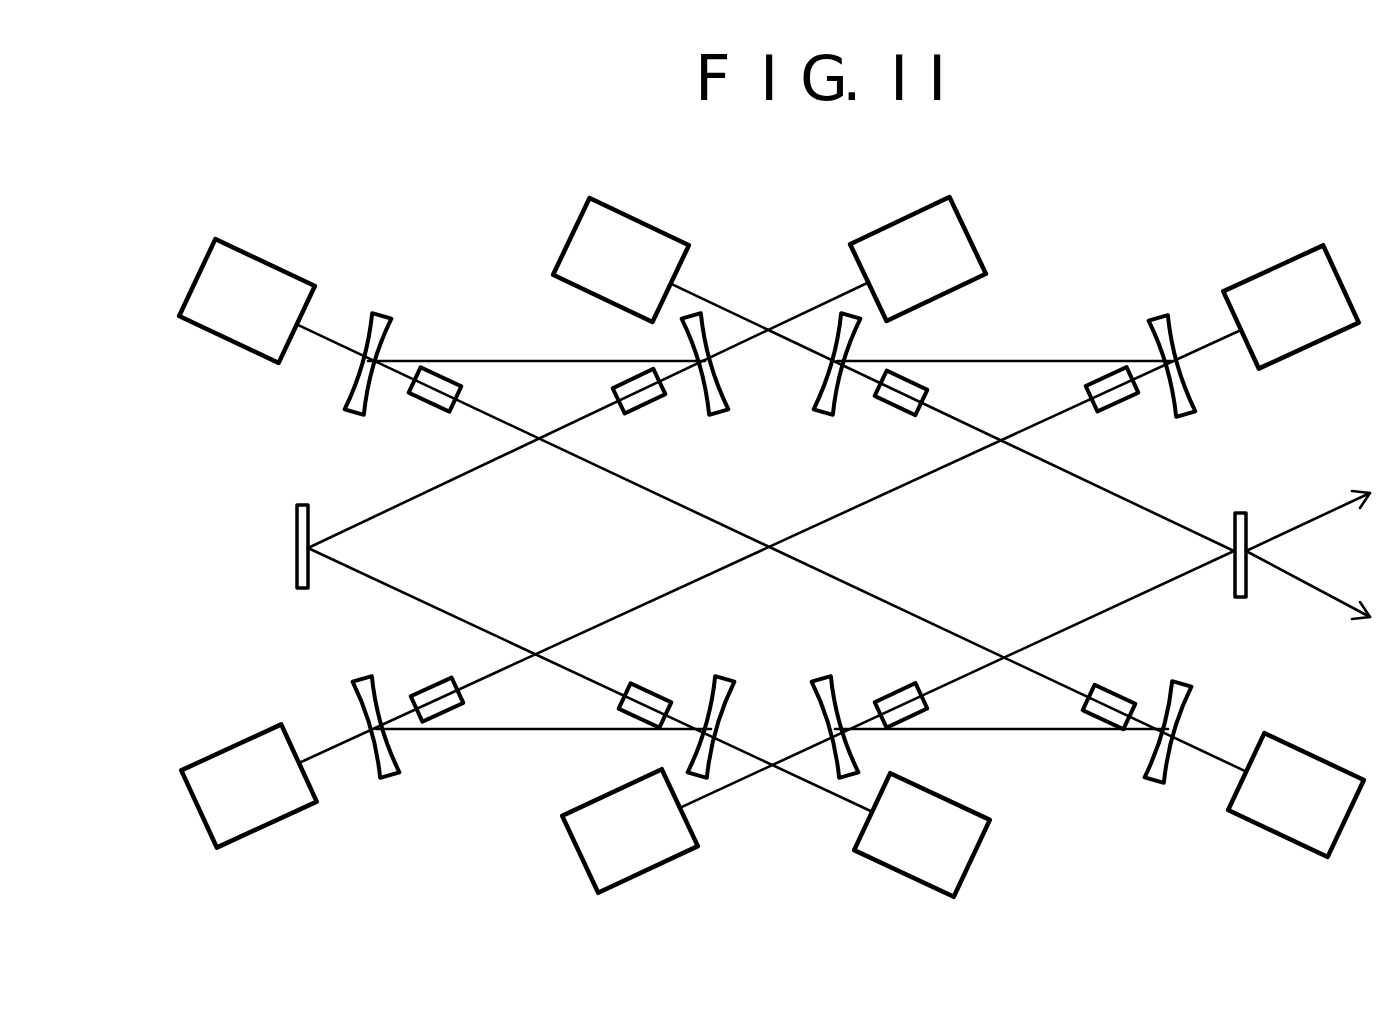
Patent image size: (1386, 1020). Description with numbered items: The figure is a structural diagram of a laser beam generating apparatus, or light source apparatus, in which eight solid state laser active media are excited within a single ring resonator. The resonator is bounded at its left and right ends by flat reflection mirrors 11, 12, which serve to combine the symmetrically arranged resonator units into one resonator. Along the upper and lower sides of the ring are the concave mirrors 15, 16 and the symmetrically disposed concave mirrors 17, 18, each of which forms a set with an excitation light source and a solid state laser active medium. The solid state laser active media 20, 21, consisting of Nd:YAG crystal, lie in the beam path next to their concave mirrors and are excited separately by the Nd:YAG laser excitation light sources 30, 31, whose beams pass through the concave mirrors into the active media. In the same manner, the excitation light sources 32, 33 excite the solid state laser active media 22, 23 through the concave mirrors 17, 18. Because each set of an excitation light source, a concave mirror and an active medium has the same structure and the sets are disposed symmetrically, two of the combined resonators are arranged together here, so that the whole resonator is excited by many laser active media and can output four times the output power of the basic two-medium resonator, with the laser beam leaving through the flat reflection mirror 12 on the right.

The flat reflection mirror 11 is at (303, 590).
The flat reflection mirror 12 is at (1239, 599).
The concave mirror 15 is at (392, 777).
The concave mirror 16 is at (724, 675).
The concave mirror 17 is at (719, 414).
The concave mirror 18 is at (378, 312).
The solid state laser active medium 20 is at (437, 687).
The solid state laser active medium 21 is at (647, 677).
The solid state laser active medium 22 is at (647, 408).
The solid state laser active medium 23 is at (430, 410).
The excitation light source 30 is at (280, 823).
The excitation light source 31 is at (877, 863).
The excitation light source 32 is at (967, 204).
The excitation light source 33 is at (267, 260).